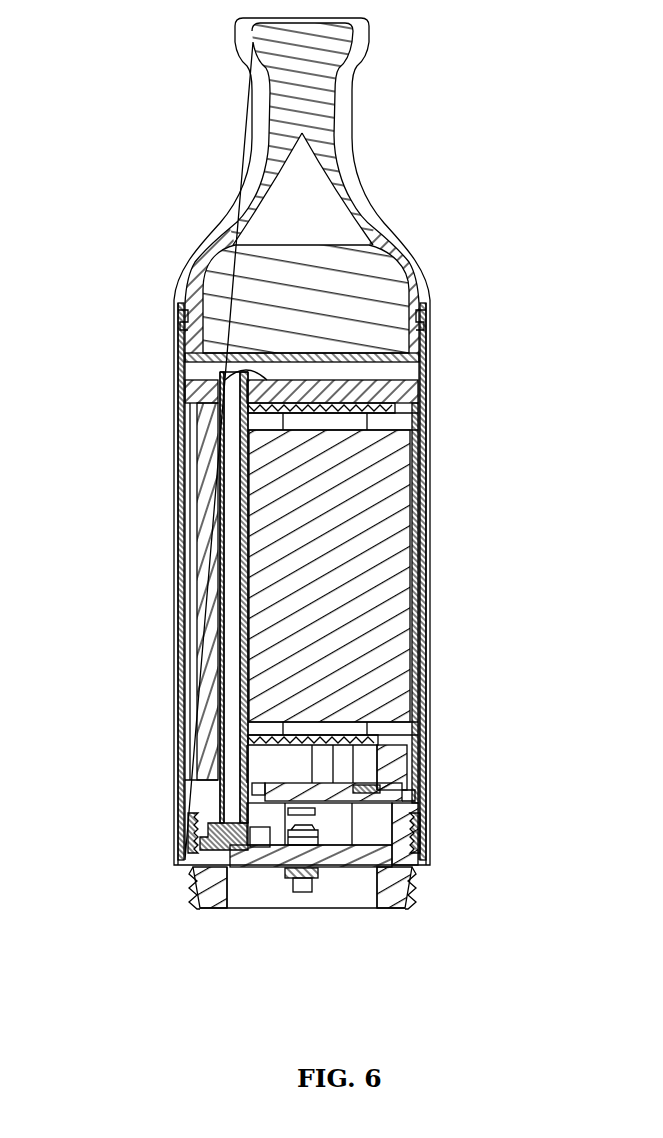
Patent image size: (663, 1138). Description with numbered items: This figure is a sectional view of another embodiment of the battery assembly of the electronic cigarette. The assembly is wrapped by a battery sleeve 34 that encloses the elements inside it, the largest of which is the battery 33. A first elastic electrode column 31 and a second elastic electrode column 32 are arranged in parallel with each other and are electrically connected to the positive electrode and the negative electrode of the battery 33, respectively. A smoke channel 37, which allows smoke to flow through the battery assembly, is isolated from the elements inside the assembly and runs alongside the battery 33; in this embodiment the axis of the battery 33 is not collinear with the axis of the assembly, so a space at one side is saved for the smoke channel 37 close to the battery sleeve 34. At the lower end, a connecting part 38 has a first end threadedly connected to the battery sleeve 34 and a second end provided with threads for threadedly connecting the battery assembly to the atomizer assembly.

The first elastic electrode column 31 is at (285, 890).
The second elastic electrode column 32 is at (200, 848).
The battery 33 is at (383, 642).
The battery sleeve 34 is at (183, 493).
The smoke channel 37 is at (232, 580).
The connecting part 38 is at (408, 855).